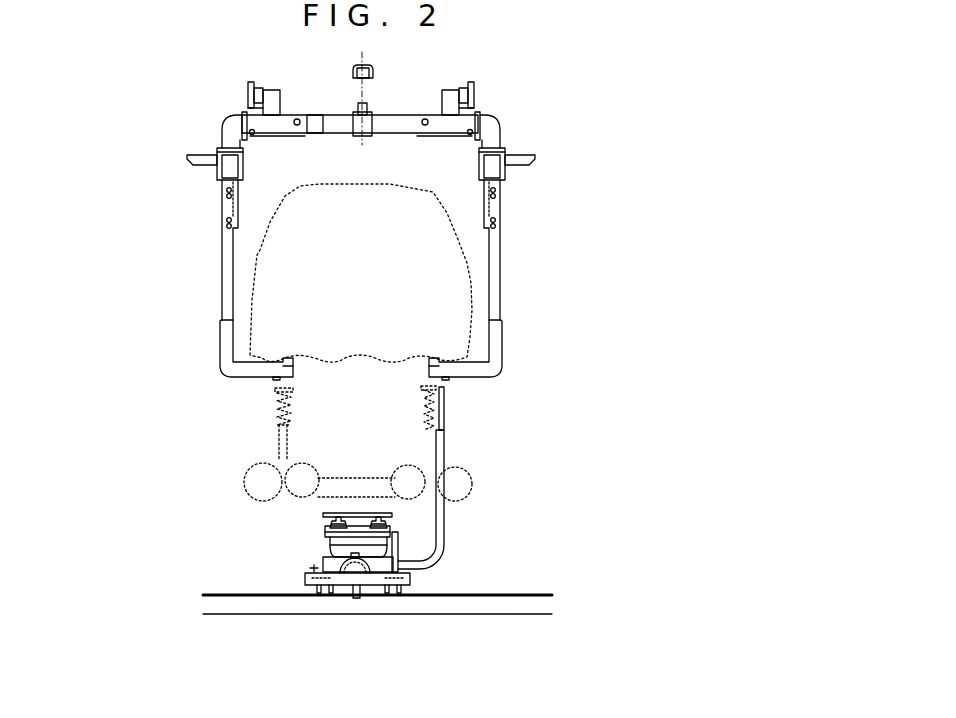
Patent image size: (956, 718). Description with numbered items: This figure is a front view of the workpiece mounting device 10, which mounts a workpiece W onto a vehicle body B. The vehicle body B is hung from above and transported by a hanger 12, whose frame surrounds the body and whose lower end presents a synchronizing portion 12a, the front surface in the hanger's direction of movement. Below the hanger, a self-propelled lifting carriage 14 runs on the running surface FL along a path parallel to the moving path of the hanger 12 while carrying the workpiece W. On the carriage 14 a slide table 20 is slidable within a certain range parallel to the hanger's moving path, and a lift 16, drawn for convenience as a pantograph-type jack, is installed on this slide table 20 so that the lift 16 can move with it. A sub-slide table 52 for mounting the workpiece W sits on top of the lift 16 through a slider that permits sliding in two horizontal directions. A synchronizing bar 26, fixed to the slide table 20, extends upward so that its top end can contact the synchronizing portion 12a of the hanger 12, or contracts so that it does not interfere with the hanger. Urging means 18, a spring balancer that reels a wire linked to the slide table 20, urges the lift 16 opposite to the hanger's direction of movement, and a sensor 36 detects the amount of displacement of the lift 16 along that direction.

The workpiece mounting device 10 is at (614, 349).
The hanger 12 is at (493, 138).
The synchronizing portion 12a is at (462, 375).
The vehicle body B is at (467, 265).
The workpiece W is at (277, 413).
The synchronizing bar 26 is at (447, 440).
The sub-slide table 52 is at (350, 513).
The lift 16 is at (323, 529).
The slide table 20 is at (323, 560).
The urging means 18 is at (340, 577).
The self-propelled lifting carriage 14 is at (410, 582).
The sensor 36 is at (312, 566).
The running surface FL is at (530, 593).